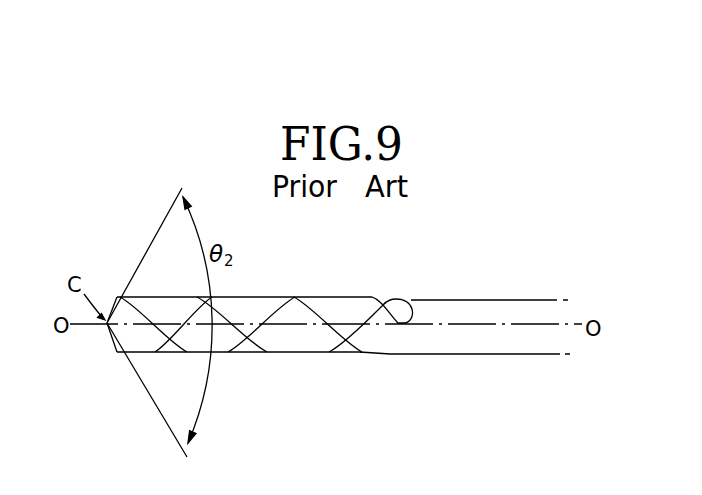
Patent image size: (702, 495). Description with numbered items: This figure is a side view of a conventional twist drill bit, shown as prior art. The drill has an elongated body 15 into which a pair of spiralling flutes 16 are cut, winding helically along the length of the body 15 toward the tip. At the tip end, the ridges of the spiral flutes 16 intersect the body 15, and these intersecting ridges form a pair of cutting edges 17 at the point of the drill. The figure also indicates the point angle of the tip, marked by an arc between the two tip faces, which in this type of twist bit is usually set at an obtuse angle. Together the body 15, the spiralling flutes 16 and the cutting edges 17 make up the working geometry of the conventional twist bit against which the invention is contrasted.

The body 15 is at (483, 312).
The spiralling flutes 16 is at (398, 308).
The cutting edges 17 is at (117, 299).